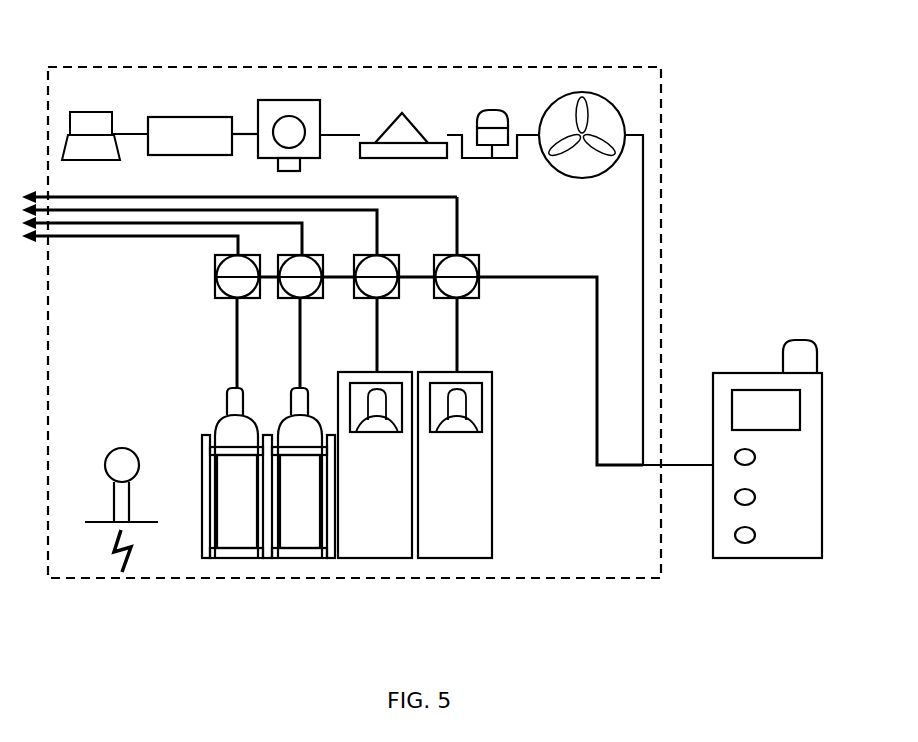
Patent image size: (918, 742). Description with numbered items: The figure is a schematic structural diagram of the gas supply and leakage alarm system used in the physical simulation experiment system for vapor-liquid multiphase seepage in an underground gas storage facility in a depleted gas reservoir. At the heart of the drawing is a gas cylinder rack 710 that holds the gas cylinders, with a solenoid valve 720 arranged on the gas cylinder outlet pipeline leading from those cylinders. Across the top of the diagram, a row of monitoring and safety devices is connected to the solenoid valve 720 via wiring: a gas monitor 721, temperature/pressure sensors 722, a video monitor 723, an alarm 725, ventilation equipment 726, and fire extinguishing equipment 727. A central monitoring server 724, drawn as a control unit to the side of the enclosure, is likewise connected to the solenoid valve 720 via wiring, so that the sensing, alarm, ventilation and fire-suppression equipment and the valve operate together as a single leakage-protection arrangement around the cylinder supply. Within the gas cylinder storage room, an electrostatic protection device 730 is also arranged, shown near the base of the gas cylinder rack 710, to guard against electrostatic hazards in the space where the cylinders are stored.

The gas cylinder rack 710 is at (380, 560).
The solenoid valve 720 is at (470, 250).
The gas monitor 721 is at (88, 104).
The temperature/pressure sensors 722 is at (185, 100).
The video monitor 723 is at (281, 97).
The central monitoring server 724 is at (740, 370).
The alarm 725 is at (491, 101).
The ventilation equipment 726 is at (578, 92).
The fire extinguishing equipment 727 is at (404, 107).
The electrostatic protection device 730 is at (147, 524).